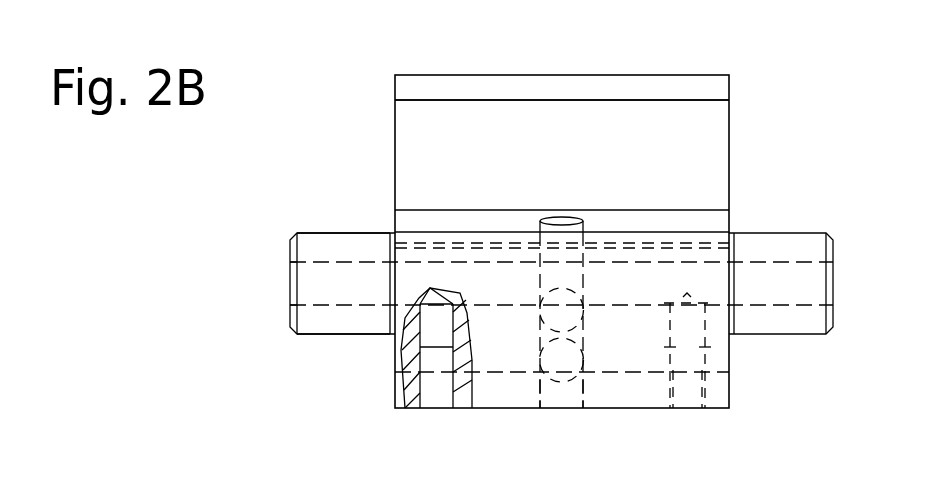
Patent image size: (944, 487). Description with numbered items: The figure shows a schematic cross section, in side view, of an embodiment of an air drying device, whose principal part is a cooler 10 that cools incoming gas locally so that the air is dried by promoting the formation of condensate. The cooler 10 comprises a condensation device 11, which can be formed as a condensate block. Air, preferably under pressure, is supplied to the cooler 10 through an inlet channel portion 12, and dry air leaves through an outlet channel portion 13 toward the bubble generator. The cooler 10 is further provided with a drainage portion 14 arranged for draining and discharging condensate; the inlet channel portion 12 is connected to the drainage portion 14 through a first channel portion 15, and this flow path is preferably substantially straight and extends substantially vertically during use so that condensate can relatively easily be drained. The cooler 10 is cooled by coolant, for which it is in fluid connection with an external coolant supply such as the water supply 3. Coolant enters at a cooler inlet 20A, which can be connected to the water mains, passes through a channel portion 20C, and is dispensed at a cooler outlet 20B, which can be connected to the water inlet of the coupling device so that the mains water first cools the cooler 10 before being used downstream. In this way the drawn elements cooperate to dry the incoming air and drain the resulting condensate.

The cooler 10 is at (746, 95).
The condensation device 11 is at (632, 154).
The inlet channel portion 12 is at (563, 218).
The outlet channel portion 13 is at (566, 357).
The drainage portion 14 is at (566, 395).
The first channel portion 15 is at (565, 278).
The cooler inlet 20A is at (795, 275).
The cooler outlet 20B is at (320, 282).
The channel portion 20C is at (418, 278).
The water supply 3 is at (362, 291).